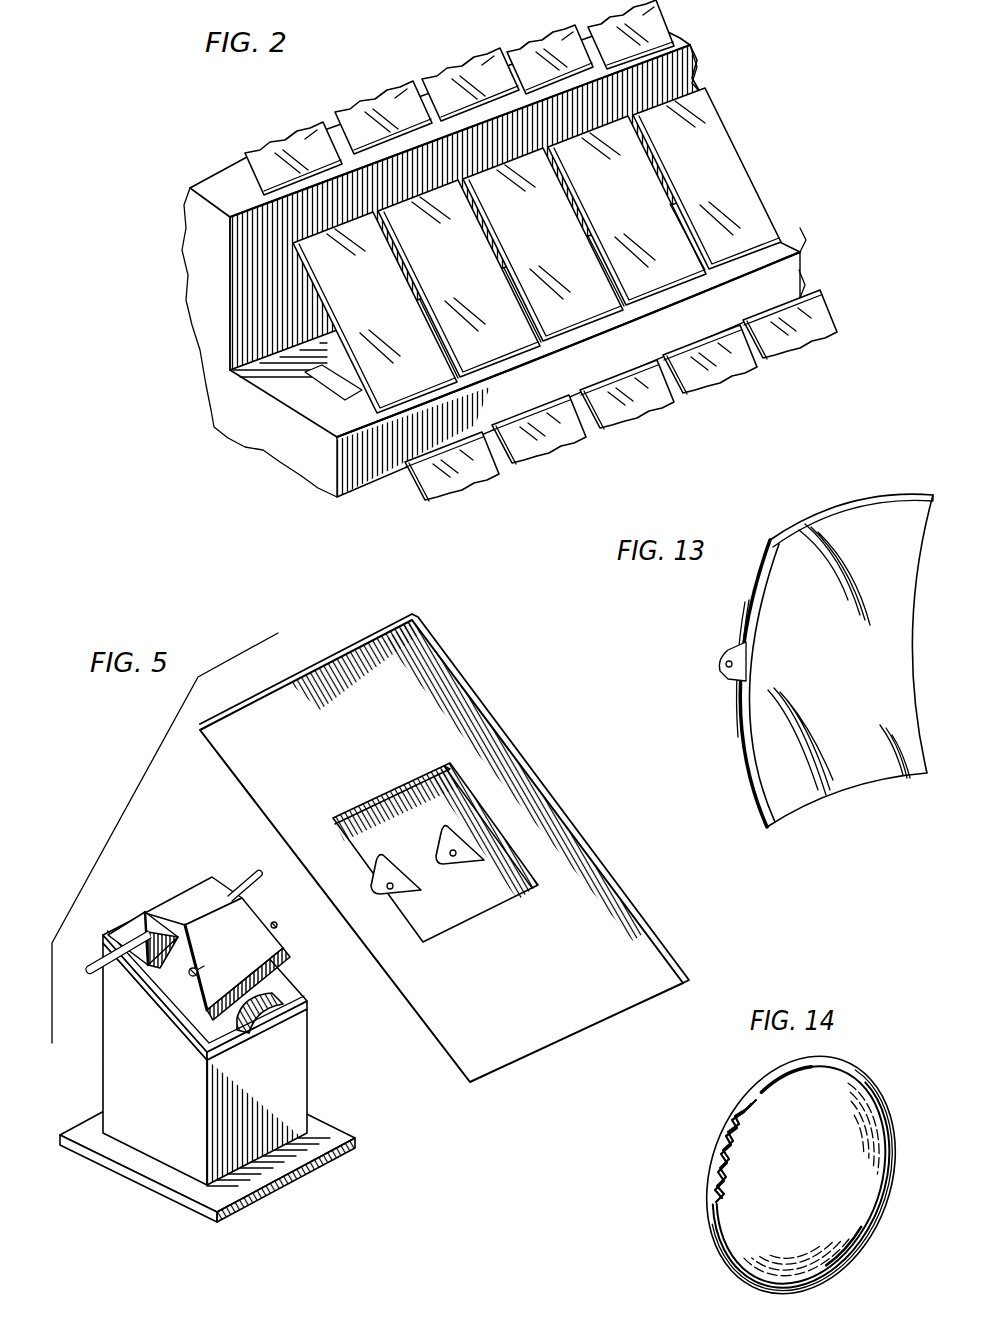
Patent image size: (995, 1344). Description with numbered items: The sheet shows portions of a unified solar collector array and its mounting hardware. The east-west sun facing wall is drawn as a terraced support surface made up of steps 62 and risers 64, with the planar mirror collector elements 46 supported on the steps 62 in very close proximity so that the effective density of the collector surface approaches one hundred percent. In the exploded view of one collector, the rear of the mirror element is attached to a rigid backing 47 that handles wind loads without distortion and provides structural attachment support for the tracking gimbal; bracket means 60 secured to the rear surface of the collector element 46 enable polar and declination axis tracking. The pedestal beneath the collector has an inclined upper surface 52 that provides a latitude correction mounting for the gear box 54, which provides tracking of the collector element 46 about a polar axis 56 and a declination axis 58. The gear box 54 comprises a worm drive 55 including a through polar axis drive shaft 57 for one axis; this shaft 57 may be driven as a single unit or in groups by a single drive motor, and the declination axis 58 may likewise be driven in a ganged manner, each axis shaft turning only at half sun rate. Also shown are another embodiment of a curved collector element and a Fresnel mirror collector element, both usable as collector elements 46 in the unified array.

In FIG. 2, the solar energy collector element 46 is at (384, 314).
In FIG. 5, the solar energy collector element 46 is at (540, 791).
In FIG. 5, the rigid backing 47 is at (534, 987).
In FIG. 5, the inclined upper surface 52 is at (232, 1046).
In FIG. 5, the gear box 54 is at (190, 890).
In FIG. 5, the worm drive 55 is at (158, 912).
In FIG. 5, the polar axis 56 is at (268, 1012).
In FIG. 5, the polar axis drive shaft 57 is at (238, 884).
In FIG. 5, the declination axis 58 is at (278, 927).
In FIG. 5, the bracket means 60 is at (464, 866).
In FIG. 2, the steps 62 is at (242, 197).
In FIG. 2, the risers 64 is at (250, 285).